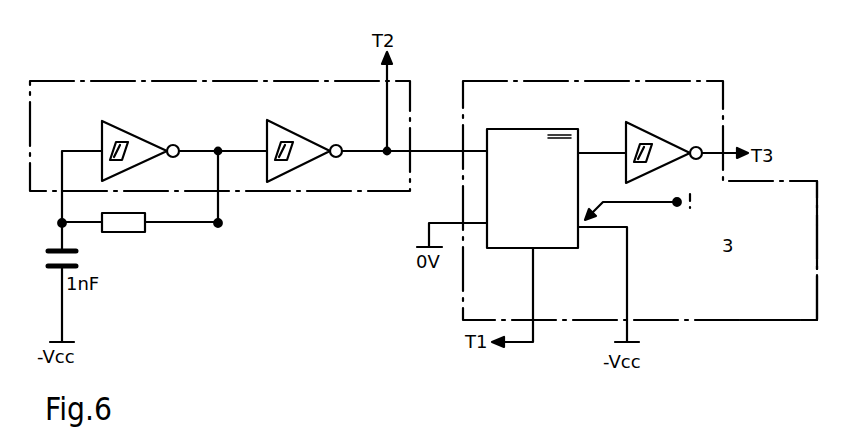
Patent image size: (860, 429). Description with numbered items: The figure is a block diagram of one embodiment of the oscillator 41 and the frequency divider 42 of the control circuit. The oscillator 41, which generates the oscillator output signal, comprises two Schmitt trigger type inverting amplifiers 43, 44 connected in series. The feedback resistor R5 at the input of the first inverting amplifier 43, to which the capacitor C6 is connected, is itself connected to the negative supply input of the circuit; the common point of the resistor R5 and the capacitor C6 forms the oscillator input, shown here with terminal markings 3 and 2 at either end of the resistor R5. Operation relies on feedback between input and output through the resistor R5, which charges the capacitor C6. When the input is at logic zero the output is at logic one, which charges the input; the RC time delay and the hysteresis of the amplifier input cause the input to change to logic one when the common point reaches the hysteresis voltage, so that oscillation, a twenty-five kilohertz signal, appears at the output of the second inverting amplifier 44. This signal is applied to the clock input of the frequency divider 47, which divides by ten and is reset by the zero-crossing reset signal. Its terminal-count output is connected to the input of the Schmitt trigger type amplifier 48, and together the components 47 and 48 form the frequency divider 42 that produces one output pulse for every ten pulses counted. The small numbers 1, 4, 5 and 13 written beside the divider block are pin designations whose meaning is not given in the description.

The oscillator 41 is at (205, 79).
The frequency divider 42 is at (560, 81).
The inverting amplifier 43 is at (140, 133).
The inverting amplifier 44 is at (304, 133).
The frequency divider 47 is at (548, 129).
The Schmitt trigger type amplifier 48 is at (653, 129).
The node / terminal 2 is at (223, 222).
The node / terminal 3 is at (56, 224).
The terminal 1 is at (770, 208).
The terminal 4 is at (769, 251).
The terminal 5 is at (769, 297).
The terminal 13 is at (767, 309).
The feedback resistor R5 is at (140, 232).
The capacitor C6 is at (77, 250).